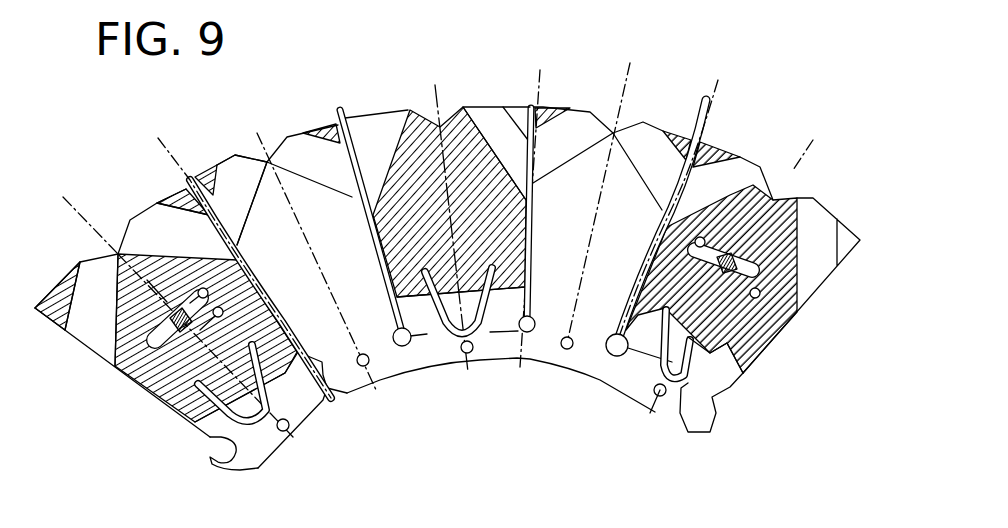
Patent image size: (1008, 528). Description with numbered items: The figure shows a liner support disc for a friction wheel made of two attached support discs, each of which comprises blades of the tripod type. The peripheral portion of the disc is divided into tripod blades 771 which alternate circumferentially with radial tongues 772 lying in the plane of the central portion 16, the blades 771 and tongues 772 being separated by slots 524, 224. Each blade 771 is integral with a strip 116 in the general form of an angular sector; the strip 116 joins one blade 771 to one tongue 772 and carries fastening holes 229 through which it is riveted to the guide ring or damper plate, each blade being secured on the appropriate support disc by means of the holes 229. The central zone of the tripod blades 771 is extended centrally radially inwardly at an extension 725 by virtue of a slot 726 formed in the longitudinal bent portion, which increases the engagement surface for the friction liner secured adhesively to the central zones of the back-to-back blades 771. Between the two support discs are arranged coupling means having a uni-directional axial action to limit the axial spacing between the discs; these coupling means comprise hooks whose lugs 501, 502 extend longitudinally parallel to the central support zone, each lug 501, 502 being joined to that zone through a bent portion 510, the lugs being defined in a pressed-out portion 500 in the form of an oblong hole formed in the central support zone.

The central portion 16 is at (438, 378).
The strip 116 is at (345, 400).
The slot 224 is at (702, 100).
The fastening holes 229 is at (657, 394).
The pressed-out portion 500 is at (722, 255).
The lug 501 is at (770, 200).
The lug 502 is at (765, 215).
The bent portion 510 is at (793, 197).
The slot 524 is at (190, 180).
The extension 725 is at (707, 353).
The slot 726 is at (682, 386).
The tripod blade 771 is at (490, 100).
The tongue 772 is at (230, 143).